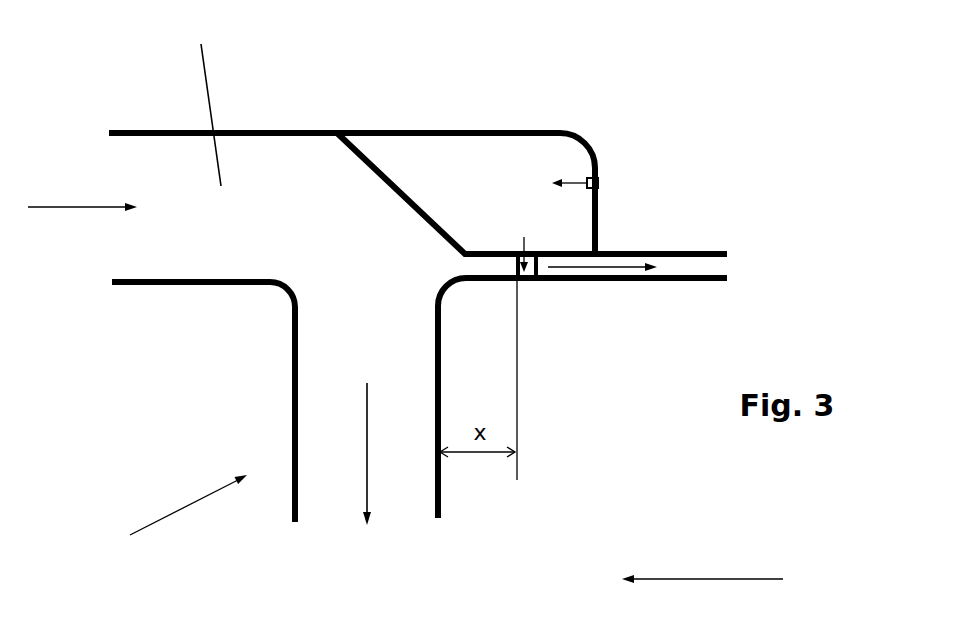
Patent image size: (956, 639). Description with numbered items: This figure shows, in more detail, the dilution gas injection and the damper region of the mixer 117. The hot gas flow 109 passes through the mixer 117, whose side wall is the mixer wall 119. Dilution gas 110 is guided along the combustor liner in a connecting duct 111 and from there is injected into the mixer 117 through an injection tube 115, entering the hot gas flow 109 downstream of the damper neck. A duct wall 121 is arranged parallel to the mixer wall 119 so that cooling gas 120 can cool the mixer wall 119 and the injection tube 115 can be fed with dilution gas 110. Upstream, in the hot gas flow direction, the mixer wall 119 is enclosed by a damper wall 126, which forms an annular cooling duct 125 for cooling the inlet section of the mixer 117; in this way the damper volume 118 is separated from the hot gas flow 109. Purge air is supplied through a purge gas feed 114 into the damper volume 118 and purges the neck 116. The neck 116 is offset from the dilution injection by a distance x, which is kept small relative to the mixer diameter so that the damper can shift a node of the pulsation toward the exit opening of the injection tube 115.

The hot gas flow 109 is at (702, 561).
The dilution gas 110 is at (392, 454).
The connecting duct 111 is at (198, 96).
The purge gas feed 114 is at (598, 180).
The injection tube 115 is at (293, 398).
The neck 116 is at (521, 253).
The mixer 117 is at (68, 550).
The damper volume 118 is at (427, 170).
The mixer wall 119 is at (207, 283).
The cooling gas 120 is at (82, 220).
The duct wall 121 is at (154, 133).
The cooling duct 125 is at (697, 272).
The damper wall 126 is at (488, 253).